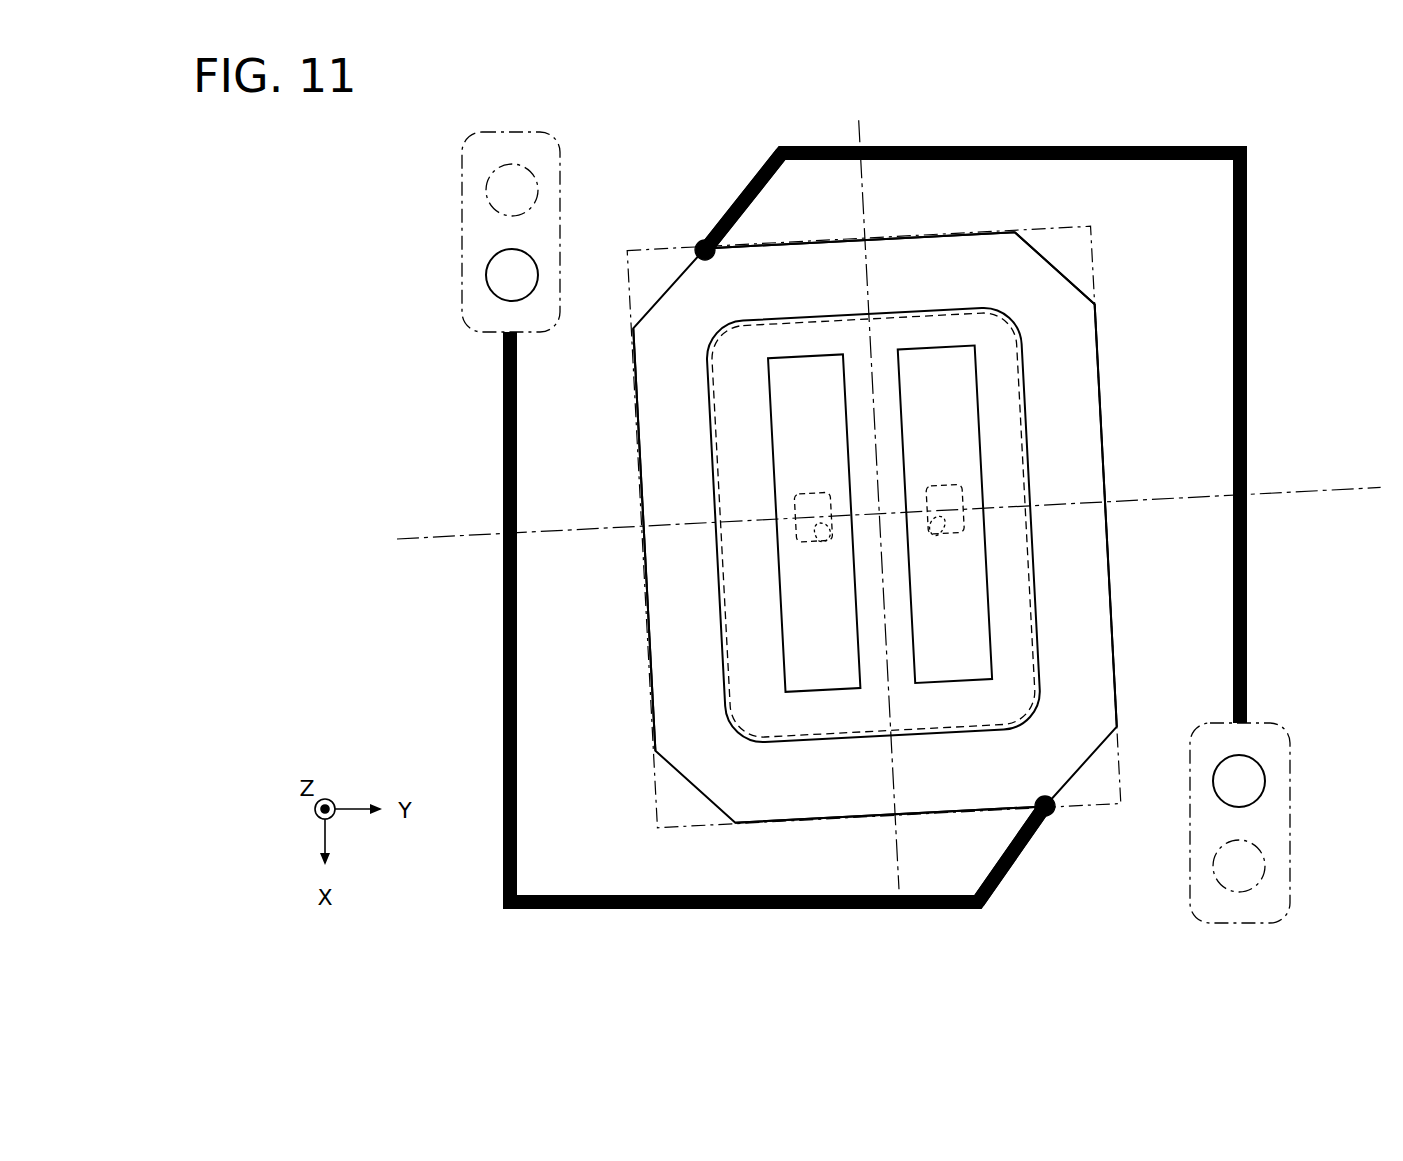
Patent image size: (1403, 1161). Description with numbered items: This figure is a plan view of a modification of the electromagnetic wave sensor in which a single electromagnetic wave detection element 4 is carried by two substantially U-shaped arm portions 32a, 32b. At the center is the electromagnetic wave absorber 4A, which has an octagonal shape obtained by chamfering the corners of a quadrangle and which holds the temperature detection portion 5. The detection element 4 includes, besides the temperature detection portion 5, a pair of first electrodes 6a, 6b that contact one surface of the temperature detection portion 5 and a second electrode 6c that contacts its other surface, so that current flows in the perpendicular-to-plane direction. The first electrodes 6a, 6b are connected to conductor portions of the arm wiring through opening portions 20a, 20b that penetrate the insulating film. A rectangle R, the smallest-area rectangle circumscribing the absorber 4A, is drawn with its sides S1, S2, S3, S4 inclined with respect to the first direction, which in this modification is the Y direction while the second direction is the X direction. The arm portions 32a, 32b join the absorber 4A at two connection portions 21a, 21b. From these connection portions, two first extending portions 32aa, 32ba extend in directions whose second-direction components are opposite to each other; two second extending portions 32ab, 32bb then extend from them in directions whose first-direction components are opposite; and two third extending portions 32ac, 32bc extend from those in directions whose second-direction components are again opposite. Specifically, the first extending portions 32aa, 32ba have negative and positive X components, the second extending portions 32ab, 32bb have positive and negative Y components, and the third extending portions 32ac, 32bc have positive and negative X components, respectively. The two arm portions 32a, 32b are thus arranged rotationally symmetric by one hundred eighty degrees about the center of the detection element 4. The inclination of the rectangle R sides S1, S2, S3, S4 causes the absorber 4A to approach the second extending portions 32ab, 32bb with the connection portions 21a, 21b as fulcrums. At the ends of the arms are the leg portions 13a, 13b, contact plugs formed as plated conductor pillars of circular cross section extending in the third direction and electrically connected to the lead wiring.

The electromagnetic wave detection element 4 is at (1058, 226).
The electromagnetic wave absorber 4A is at (1017, 226).
The rectangle R is at (1097, 226).
The side S1 is at (784, 238).
The side S2 is at (718, 829).
The side S3 is at (1104, 428).
The side S4 is at (641, 561).
The temperature detection portion 5 is at (1002, 319).
The first electrode 6a is at (935, 370).
The first electrode 6b is at (808, 385).
The second electrode 6c is at (945, 312).
The opening portion 20a is at (934, 545).
The opening portion 20b is at (826, 540).
The connection portion 21a is at (698, 245).
The connection portion 21b is at (1053, 812).
The arm portion 32a is at (1041, 406).
The first extending portion 32aa is at (758, 182).
The second extending portion 32ab is at (1000, 146).
The third extending portion 32ac is at (1250, 381).
The arm portion 32b is at (745, 654).
The first extending portion 32ba is at (1012, 872).
The second extending portion 32bb is at (760, 910).
The third extending portion 32bc is at (503, 615).
The leg portion 13a is at (1266, 781).
The leg portion 13b is at (486, 275).